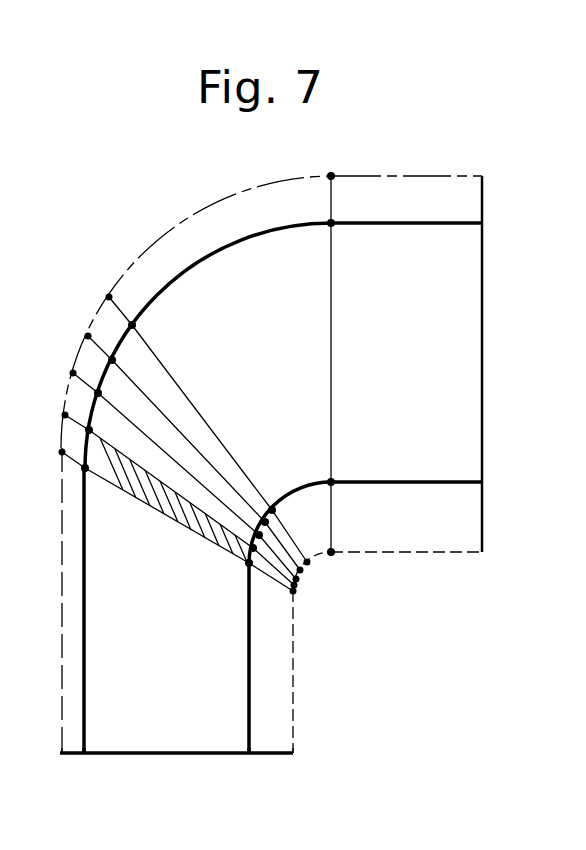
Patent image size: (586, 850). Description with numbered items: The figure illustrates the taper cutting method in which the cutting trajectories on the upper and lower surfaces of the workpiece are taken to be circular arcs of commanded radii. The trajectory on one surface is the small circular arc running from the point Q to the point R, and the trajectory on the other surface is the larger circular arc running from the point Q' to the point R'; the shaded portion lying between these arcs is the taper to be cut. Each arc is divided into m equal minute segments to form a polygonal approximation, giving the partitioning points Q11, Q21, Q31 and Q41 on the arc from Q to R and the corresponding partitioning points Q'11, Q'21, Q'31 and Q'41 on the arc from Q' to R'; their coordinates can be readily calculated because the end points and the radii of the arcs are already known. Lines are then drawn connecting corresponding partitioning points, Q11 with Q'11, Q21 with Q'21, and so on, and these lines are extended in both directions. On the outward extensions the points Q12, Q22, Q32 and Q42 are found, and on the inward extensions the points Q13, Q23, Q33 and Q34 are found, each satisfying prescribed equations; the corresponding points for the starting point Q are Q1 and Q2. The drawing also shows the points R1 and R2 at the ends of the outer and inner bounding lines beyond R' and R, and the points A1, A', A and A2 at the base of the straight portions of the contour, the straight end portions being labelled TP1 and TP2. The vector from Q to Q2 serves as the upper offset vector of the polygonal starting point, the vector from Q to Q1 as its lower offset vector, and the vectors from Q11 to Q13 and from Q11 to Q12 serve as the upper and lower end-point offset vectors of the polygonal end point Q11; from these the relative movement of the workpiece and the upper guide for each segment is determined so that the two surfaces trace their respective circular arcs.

The lower offset point of polygonal starting point Q1 is at (50, 456).
The lower-side partitioning point Q12 is at (47, 416).
The lower-side partitioning point Q22 is at (53, 373).
The lower-side partitioning point Q32 is at (66, 333).
The lower-side partitioning point Q42 is at (89, 291).
The starting point of circular arc Q'R' Q' is at (94, 487).
The partitioning point on arc Q'R' Q'11 is at (110, 424).
The partitioning point on arc Q'R' Q'21 is at (118, 391).
The partitioning point on arc Q'R' Q'31 is at (132, 357).
The partitioning point on arc Q'R' Q'41 is at (154, 326).
The polygonal starting point Q is at (241, 572).
The partitioning point on arc QR Q11 is at (250, 508).
The partitioning point on arc QR Q21 is at (262, 512).
The partitioning point on arc QR Q31 is at (268, 515).
The partitioning point on arc QR Q41 is at (293, 514).
The upper offset point of polygonal starting point Q2 is at (296, 596).
The upper-side partitioning point Q13 is at (297, 590).
The upper-side partitioning point Q23 is at (299, 582).
The upper-side partitioning point Q33 is at (304, 572).
The upper-side partitioning point Q34 is at (312, 563).
The end point of circular arc QR R is at (338, 472).
The end point of circular arc Q' R' is at (341, 237).
The point R1 at outer reference arc end R1 is at (331, 163).
The point R2 at inner reference arc end R2 is at (342, 541).
The point A at inner wall base A is at (245, 767).
The point A' at outer wall base A' is at (89, 770).
The point A1 at outer reference line base A1 is at (54, 770).
The point A2 at inner reference line base A2 is at (293, 767).
The first tangent plane (base line) TP1 is at (190, 744).
The second tangent plane (end section) TP2 is at (452, 472).